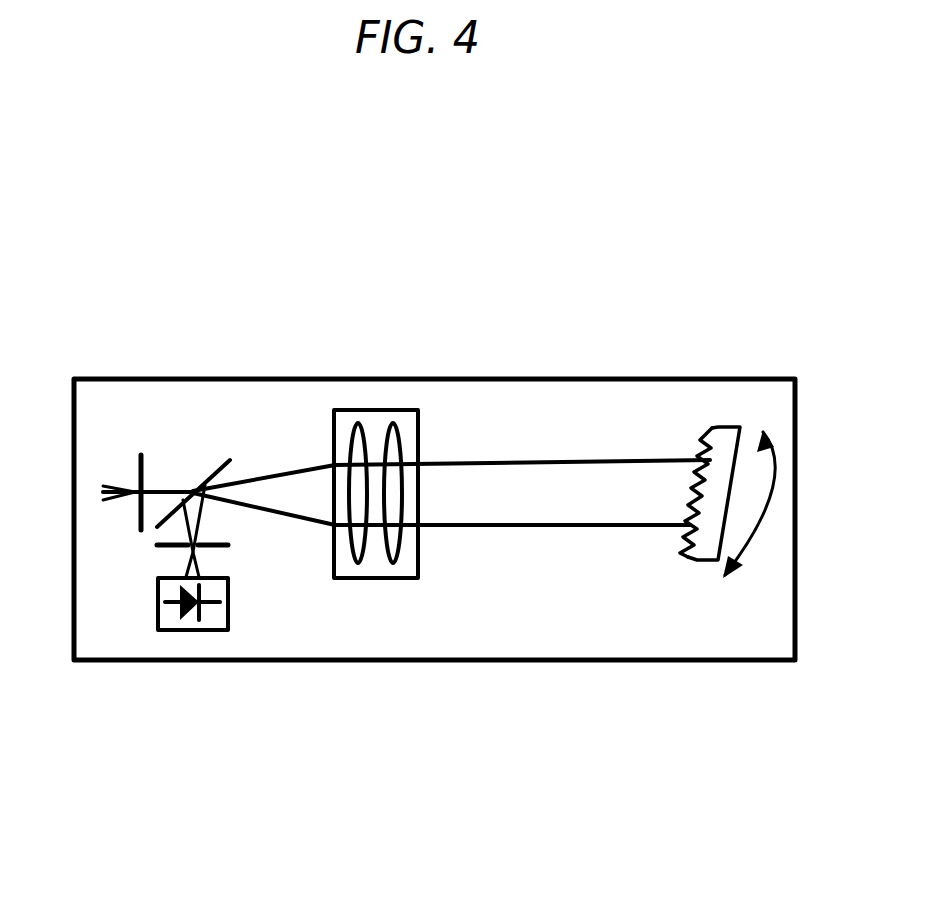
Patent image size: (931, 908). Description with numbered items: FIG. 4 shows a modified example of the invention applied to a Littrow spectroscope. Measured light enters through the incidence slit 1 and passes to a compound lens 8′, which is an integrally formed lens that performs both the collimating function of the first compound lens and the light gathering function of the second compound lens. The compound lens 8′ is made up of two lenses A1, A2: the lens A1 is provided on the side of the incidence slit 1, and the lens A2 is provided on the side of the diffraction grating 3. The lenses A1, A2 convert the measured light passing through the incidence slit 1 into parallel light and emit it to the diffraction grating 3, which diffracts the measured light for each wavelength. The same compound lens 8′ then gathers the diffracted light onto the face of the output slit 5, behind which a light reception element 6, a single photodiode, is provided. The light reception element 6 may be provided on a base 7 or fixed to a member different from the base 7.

The incidence slit 1 is at (141, 455).
The diffraction grating 3 is at (730, 427).
The output slit 5 is at (160, 548).
The light reception element 6 is at (175, 632).
The base 7 is at (697, 377).
The compound lens 8′ is at (320, 577).
The lens A1 is at (358, 563).
The lens A2 is at (393, 563).